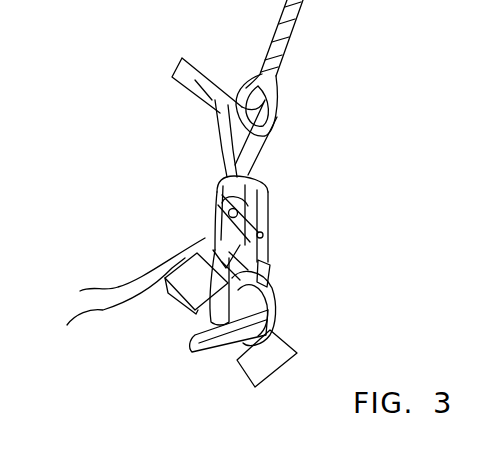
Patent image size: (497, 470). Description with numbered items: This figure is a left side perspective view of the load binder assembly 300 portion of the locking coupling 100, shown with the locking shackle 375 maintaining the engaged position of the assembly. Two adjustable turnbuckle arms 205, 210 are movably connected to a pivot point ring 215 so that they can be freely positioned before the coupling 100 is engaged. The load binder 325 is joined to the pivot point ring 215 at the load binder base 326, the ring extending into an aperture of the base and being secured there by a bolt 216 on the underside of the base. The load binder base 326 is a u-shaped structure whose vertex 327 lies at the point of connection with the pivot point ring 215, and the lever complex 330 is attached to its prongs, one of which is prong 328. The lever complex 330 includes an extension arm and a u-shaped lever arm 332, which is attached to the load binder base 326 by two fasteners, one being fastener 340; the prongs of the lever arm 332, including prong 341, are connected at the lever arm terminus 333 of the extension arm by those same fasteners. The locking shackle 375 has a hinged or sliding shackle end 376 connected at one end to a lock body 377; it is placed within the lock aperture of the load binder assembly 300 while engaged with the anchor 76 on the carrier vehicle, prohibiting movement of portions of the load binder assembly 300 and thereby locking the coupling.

The adjustable turnbuckle arm 205 is at (298, 20).
The pivot point ring 215 is at (265, 137).
The adjustable turnbuckle arm 210 is at (178, 98).
The bolt 216 is at (243, 175).
The vertex 327 is at (228, 175).
The load binder 325 is at (179, 214).
The load binder base 326 is at (264, 196).
The lever arm terminus 333 is at (262, 214).
The fastener 340 is at (264, 229).
The prong 328 is at (266, 240).
The lever complex 330 is at (222, 218).
The prong 341 is at (258, 254).
The load binder assembly 300 is at (324, 304).
The locking coupling 100 is at (375, 222).
The locking shackle 375 is at (168, 278).
The shackle end 376 is at (116, 273).
The lock body 377 is at (113, 305).
The lever arm 332 is at (210, 285).
The anchor 76 is at (263, 367).